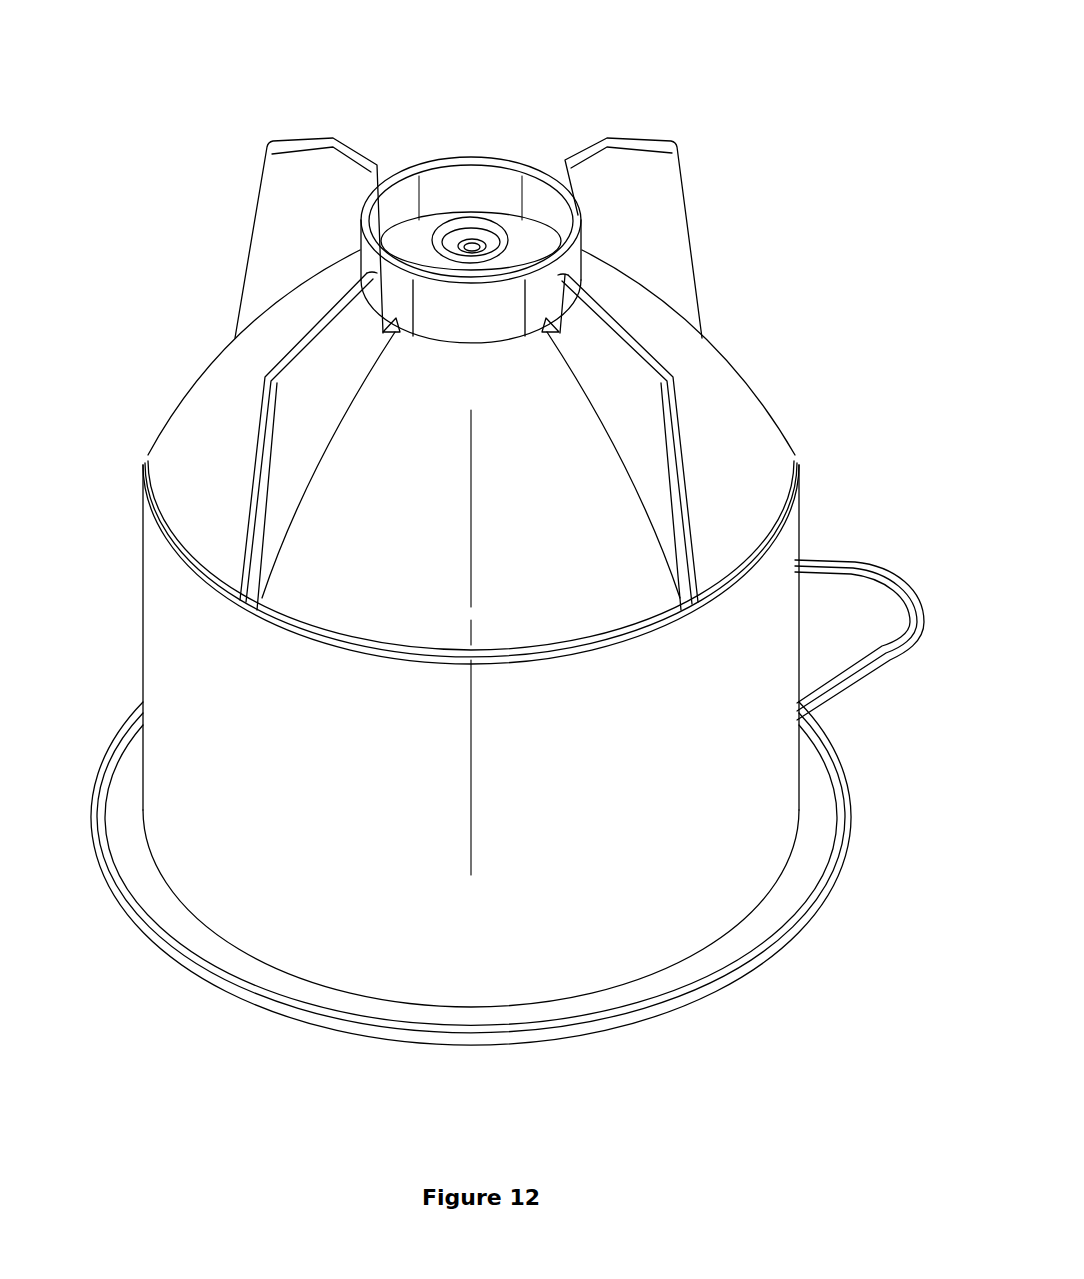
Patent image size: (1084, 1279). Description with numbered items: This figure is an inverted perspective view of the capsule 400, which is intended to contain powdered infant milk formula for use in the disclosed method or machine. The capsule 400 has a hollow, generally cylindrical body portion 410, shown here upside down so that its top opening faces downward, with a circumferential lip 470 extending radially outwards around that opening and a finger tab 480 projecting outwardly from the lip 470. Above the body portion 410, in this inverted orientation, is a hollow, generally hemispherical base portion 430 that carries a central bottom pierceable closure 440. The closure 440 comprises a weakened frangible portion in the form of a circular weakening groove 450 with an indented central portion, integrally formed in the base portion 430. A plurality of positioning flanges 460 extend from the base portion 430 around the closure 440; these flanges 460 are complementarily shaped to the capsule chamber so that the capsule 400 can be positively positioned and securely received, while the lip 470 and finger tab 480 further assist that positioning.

The capsule 400 is at (690, 88).
The body portion 410 is at (604, 787).
The base portion 430 is at (561, 499).
The bottom pierceable closure 440 is at (484, 206).
The circular weakening groove 450 is at (443, 226).
The positioning flanges 460 is at (250, 218).
The circumferential lip 470 is at (845, 866).
The finger tab 480 is at (866, 557).